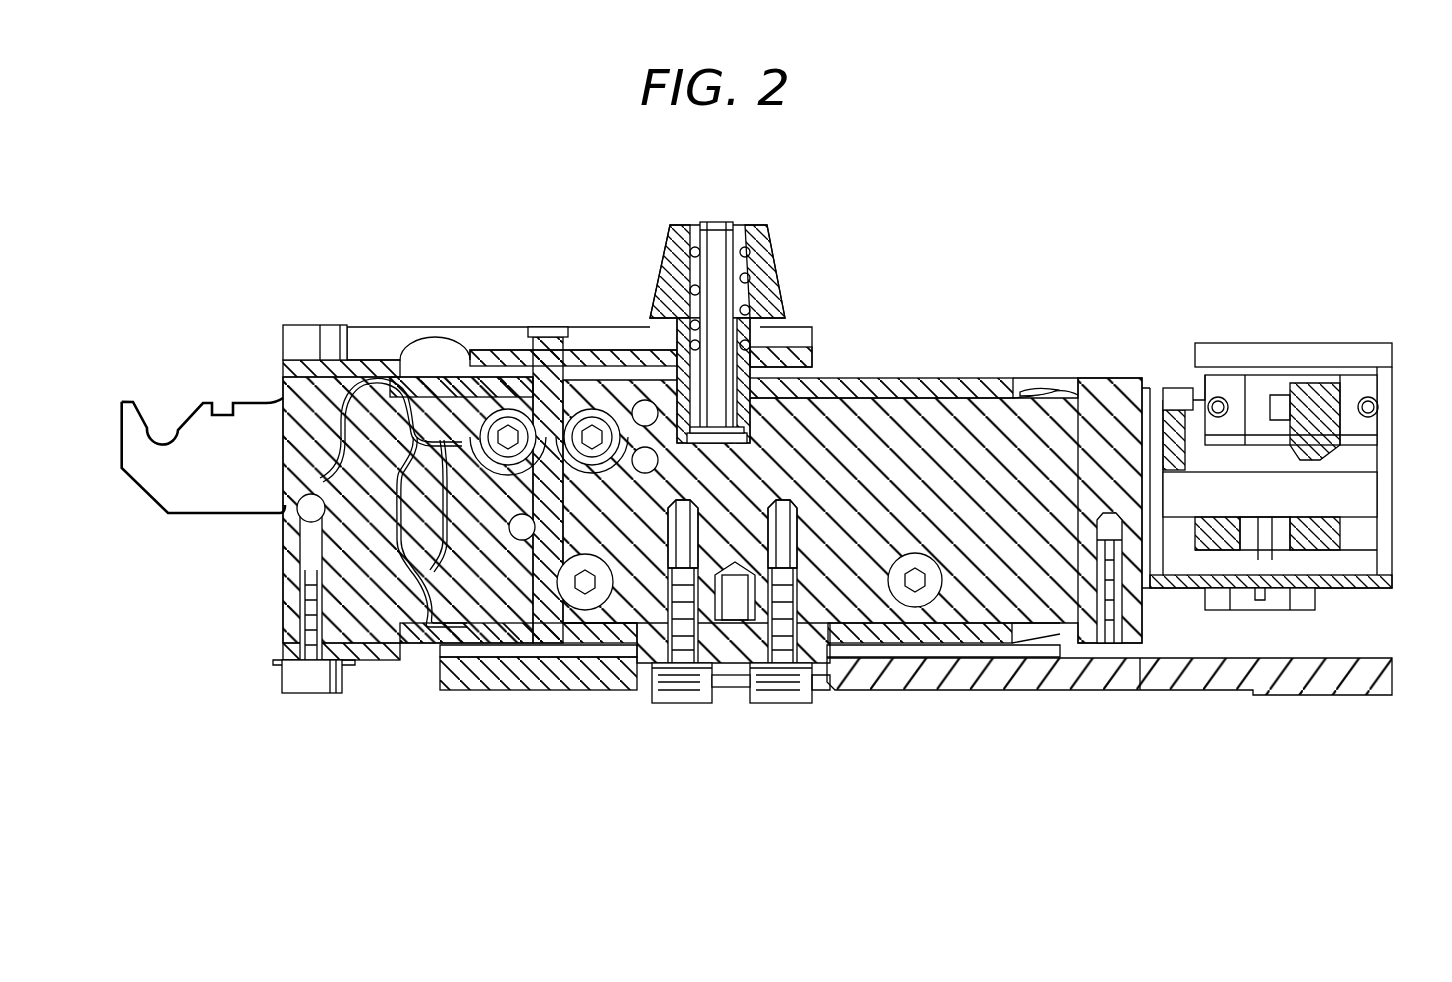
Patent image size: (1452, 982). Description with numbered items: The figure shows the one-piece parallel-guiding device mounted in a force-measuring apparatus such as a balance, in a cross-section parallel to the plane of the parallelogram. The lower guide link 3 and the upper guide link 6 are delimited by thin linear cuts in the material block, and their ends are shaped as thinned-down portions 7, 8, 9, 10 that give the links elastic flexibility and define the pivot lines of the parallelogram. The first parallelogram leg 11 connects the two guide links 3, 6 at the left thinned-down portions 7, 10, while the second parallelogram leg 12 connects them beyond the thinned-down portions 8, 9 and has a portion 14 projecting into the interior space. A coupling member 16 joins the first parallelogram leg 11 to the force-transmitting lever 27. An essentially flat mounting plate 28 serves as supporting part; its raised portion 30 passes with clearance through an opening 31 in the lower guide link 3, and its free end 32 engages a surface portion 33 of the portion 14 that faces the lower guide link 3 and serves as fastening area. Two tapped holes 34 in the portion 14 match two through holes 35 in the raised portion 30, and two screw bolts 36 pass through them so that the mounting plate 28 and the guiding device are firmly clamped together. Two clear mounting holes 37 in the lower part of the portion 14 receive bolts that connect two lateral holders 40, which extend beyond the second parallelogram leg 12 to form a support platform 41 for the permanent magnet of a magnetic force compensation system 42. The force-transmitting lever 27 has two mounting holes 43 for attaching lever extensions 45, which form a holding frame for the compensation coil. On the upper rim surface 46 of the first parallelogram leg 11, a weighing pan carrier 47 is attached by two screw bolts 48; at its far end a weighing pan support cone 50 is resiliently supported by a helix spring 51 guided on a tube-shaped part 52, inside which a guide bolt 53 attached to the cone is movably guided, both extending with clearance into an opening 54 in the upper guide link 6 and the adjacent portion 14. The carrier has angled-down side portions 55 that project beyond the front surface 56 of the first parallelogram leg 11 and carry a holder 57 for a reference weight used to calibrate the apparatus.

The lower guide link 3 is at (970, 640).
The upper guide link 6 is at (960, 385).
The thinned-down portion 7 is at (437, 640).
The thinned-down portion 8 is at (1100, 680).
The thinned-down portion 9 is at (1050, 390).
The thinned-down portion 10 is at (438, 377).
The first parallelogram leg 11 is at (360, 640).
The second parallelogram leg 12 is at (1117, 400).
The projecting portion 14 is at (977, 440).
The coupling member 16 is at (403, 640).
The force-transmitting lever 27 is at (462, 410).
The mounting plate 28 is at (1057, 675).
The raised portion 30 is at (722, 655).
The opening 31 is at (606, 665).
The free end 32 is at (819, 667).
The surface portion 33 is at (823, 607).
The tapped holes 34 is at (773, 540).
The through holes 35 is at (650, 668).
The screw bolts 36 is at (661, 703).
The mounting holes 37 is at (583, 585).
The lateral holders 40 is at (1147, 560).
The support platform 41 is at (1373, 588).
The magnetic force compensation system 42 is at (1410, 460).
The mounting holes 43 is at (588, 432).
The lever extensions 45 is at (1150, 385).
The upper rim surface 46 is at (283, 390).
The weighing pan carrier 47 is at (377, 347).
The screw bolts 48 is at (317, 325).
The weighing pan support cone 50 is at (676, 238).
The helix spring 51 is at (745, 262).
The tube-shaped part 52 is at (787, 317).
The guide bolt 53 is at (713, 224).
The opening 54 is at (752, 428).
The angled-down side portions 55 is at (203, 490).
The front surface 56 is at (280, 537).
The holder 57 is at (172, 436).